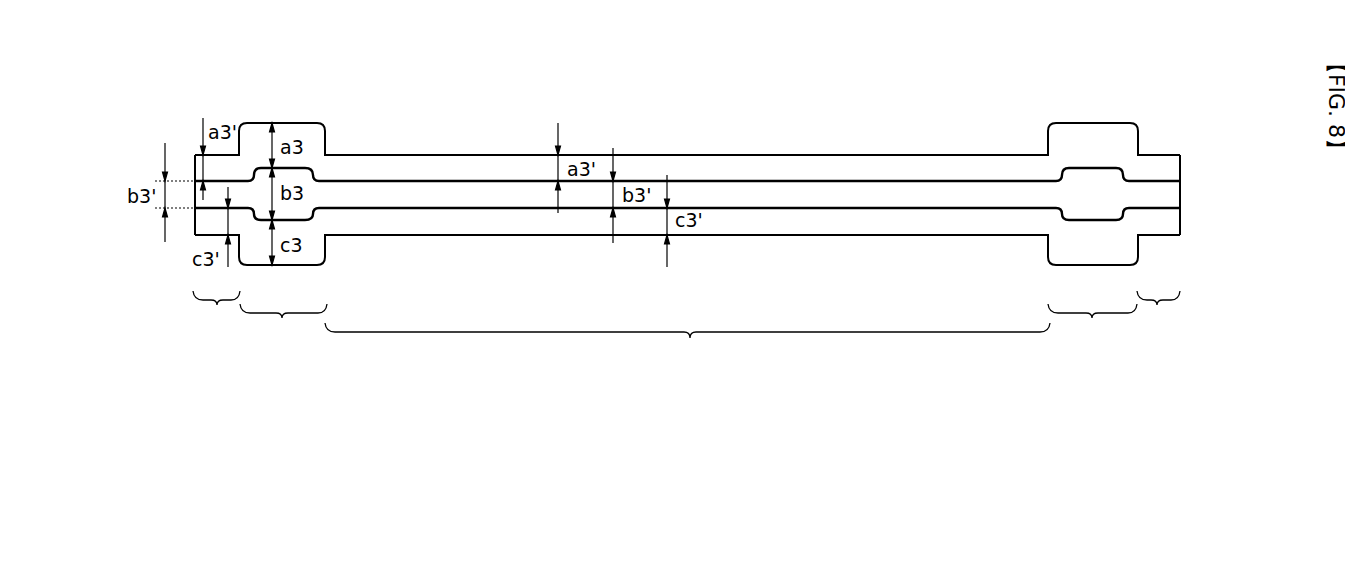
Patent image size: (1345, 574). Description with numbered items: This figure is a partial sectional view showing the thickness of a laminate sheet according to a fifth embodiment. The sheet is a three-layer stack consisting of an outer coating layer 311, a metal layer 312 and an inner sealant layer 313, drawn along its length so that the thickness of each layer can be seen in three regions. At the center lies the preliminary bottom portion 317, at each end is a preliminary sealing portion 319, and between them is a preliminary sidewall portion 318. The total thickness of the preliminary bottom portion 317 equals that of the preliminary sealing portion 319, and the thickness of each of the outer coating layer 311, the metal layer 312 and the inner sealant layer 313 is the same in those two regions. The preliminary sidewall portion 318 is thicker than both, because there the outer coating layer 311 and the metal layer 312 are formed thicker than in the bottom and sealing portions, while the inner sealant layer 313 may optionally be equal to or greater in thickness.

The outer coating layer 311 is at (1163, 163).
The metal layer 312 is at (1163, 192).
The inner sealant layer 313 is at (1160, 216).
The preliminary bottom portion 317 is at (687, 345).
The preliminary sidewall portion 318 is at (688, 326).
The preliminary sealing portion 319 is at (686, 313).